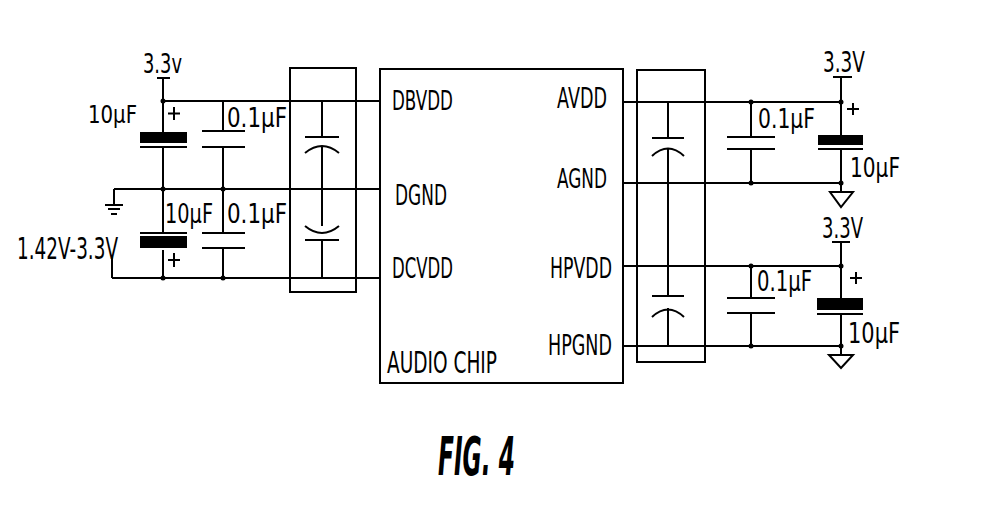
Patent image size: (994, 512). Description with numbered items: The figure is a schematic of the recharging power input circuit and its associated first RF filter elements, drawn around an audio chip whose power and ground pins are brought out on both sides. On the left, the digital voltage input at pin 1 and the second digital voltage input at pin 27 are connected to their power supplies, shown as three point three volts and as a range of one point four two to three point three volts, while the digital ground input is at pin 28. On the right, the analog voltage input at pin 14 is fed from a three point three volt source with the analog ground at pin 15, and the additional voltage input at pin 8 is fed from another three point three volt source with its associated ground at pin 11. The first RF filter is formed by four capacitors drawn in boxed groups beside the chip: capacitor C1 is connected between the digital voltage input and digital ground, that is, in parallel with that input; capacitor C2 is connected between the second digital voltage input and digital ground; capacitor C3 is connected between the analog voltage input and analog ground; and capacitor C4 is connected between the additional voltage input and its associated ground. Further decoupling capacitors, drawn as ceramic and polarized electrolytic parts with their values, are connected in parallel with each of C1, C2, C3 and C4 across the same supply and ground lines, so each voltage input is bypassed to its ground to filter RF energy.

The DBVDD pin of audio chip 1 is at (325, 82).
The DGND pin of audio chip 28 is at (318, 170).
The DCVDD pin of audio chip 27 is at (318, 263).
The AVDD pin of audio chip 14 is at (732, 86).
The AGND pin of audio chip 15 is at (732, 168).
The HPVDD pin of audio chip 8 is at (732, 254).
The HPGND pin of audio chip 11 is at (732, 332).
The capacitor C1 is at (326, 145).
The capacitor C2 is at (326, 234).
The capacitor C3 is at (675, 142).
The capacitor C4 is at (675, 264).